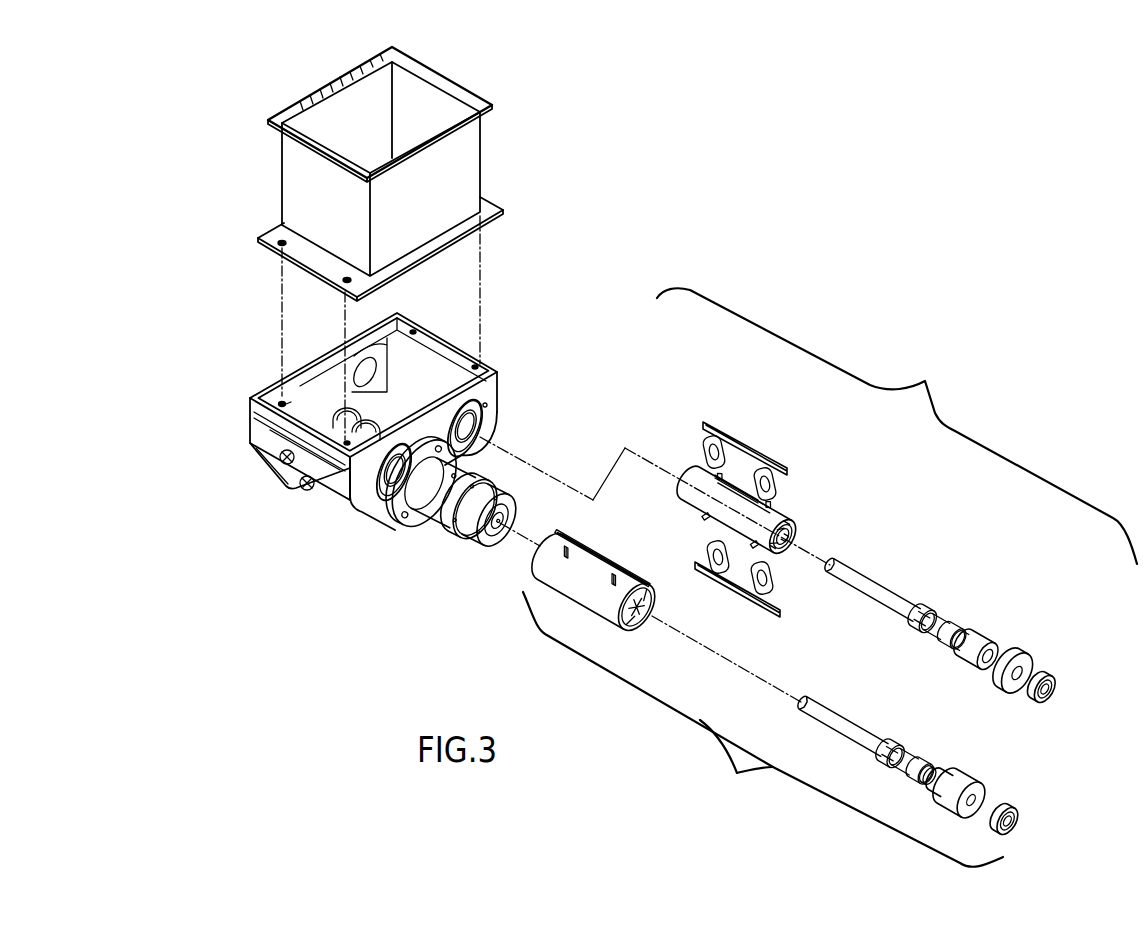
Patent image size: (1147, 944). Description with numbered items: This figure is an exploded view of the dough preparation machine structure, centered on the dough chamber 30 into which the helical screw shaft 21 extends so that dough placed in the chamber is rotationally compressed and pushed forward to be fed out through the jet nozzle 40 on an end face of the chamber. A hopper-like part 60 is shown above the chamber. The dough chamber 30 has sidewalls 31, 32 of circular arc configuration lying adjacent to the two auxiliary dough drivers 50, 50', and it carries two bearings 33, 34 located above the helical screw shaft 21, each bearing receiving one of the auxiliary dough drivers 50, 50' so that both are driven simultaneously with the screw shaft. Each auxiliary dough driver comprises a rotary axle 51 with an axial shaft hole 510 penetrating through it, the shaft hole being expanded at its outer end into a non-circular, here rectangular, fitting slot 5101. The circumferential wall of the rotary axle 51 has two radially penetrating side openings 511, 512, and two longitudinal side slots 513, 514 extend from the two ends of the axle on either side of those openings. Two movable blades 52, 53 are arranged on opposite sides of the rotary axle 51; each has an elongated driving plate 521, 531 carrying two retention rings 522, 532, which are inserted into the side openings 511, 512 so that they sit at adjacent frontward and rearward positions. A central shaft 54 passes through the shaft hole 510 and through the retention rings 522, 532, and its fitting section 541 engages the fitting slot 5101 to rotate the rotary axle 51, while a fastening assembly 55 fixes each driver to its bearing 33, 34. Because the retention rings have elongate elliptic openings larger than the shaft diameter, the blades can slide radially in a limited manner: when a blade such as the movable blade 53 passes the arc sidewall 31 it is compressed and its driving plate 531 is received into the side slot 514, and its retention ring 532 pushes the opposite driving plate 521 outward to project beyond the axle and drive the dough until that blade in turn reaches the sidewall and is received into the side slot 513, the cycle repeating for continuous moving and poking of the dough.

The hopper 60 is at (474, 163).
The dough chamber 30 is at (494, 328).
The sidewall 31 is at (410, 362).
The helical screw shaft 21 is at (282, 399).
The sidewall 32 is at (283, 488).
The bearing 33 is at (487, 413).
The bearing 34 is at (353, 505).
The jet nozzle 40 is at (428, 518).
The auxiliary dough driver 50 is at (830, 577).
The rotary axle 51 is at (747, 470).
The shaft hole 510 is at (790, 535).
The fitting slot 5101 is at (805, 541).
The side opening 511 is at (772, 500).
The side opening 512 is at (745, 465).
The side slot 513 is at (795, 528).
The movable blade 52 is at (708, 427).
The driving plate 521 is at (703, 424).
The retention ring 522 is at (705, 448).
The movable blade 53 is at (766, 599).
The driving plate 531 is at (775, 616).
The retention ring 532 is at (775, 585).
The central shaft 54 is at (910, 580).
The fitting section 541 is at (925, 605).
The side slot 514 is at (832, 568).
The fastening assembly 55 is at (1023, 627).
The auxiliary dough driver 50' is at (862, 763).